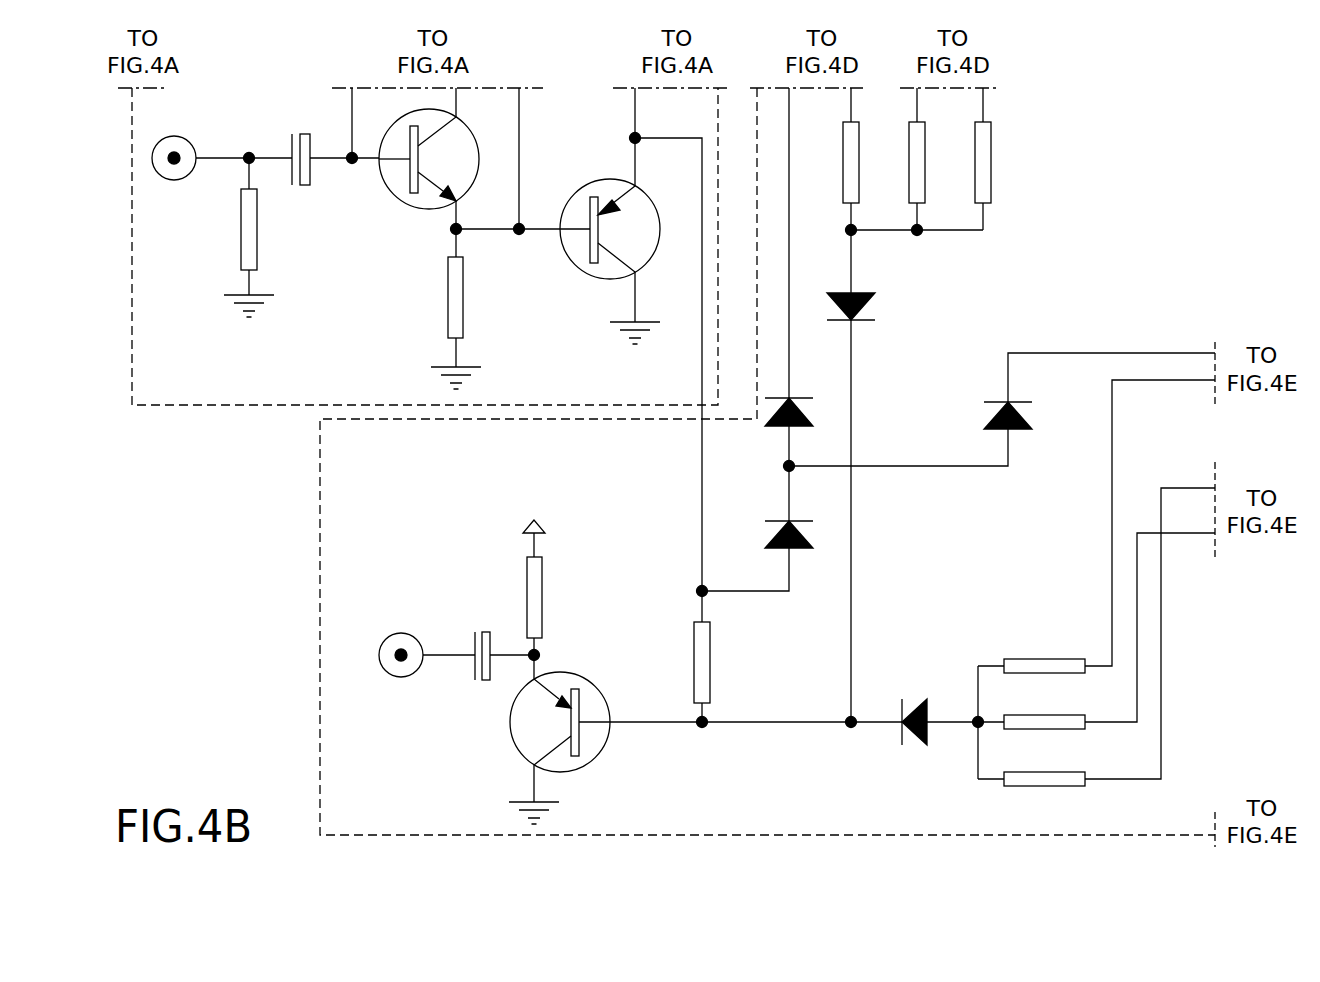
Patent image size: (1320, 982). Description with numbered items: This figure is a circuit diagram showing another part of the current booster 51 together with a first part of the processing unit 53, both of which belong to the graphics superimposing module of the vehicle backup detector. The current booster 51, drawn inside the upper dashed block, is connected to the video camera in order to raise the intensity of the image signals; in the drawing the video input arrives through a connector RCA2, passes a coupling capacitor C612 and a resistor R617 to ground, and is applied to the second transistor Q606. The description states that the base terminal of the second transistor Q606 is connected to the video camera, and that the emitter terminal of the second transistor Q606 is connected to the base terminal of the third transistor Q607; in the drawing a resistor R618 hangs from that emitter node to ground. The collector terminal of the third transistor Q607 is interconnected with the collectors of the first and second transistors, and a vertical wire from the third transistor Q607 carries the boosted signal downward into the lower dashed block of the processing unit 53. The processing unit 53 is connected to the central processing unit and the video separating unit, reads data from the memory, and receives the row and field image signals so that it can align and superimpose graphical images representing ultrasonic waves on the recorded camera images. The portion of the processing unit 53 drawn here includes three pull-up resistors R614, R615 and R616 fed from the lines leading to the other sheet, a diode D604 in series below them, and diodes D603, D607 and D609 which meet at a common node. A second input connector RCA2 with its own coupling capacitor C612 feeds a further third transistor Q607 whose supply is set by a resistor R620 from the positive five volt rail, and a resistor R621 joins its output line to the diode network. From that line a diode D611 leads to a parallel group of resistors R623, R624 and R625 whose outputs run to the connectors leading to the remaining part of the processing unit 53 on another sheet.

The current booster 51 is at (218, 406).
The processing unit 53 is at (320, 589).
The RCA connector RCA2 is at (309, 393).
The capacitor C612 is at (404, 395).
The resistor R617 is at (229, 237).
The second transistor Q606 is at (413, 158).
The resistor R618 is at (473, 309).
The third transistor Q607 is at (601, 456).
The resistor R614 is at (878, 163).
The resistor R615 is at (944, 163).
The resistor R616 is at (1011, 163).
The diode D604 is at (867, 476).
The diode D603 is at (805, 416).
The diode D607 is at (1099, 391).
The diode D609 is at (757, 528).
The resistor R621 is at (727, 656).
The diode D611 is at (934, 709).
The resistor R623 is at (1096, 526).
The resistor R624 is at (1096, 631).
The resistor R625 is at (1096, 637).
The resistor R620 is at (555, 576).